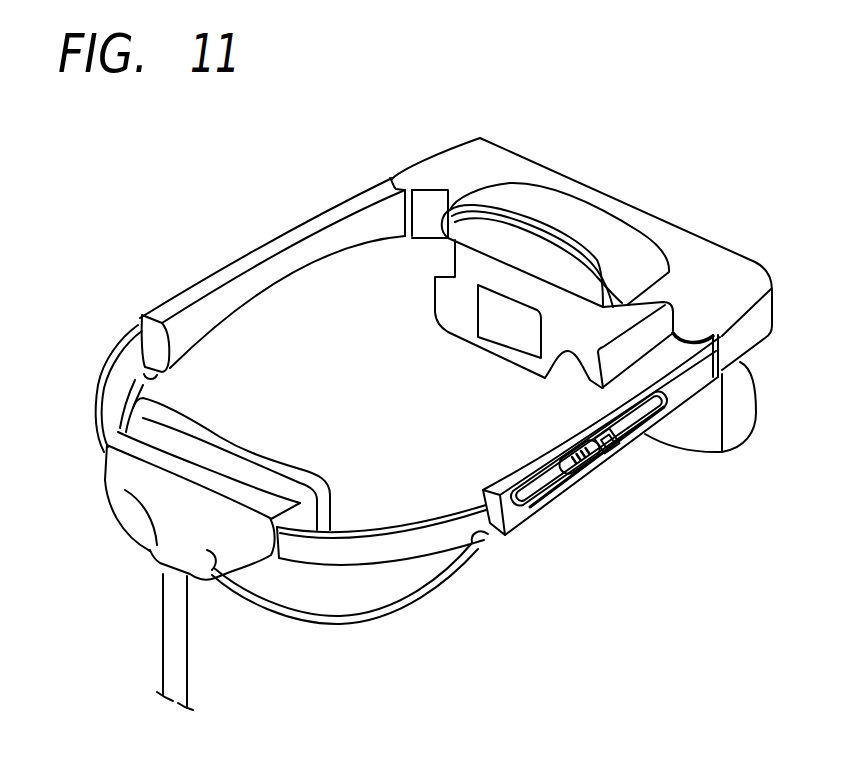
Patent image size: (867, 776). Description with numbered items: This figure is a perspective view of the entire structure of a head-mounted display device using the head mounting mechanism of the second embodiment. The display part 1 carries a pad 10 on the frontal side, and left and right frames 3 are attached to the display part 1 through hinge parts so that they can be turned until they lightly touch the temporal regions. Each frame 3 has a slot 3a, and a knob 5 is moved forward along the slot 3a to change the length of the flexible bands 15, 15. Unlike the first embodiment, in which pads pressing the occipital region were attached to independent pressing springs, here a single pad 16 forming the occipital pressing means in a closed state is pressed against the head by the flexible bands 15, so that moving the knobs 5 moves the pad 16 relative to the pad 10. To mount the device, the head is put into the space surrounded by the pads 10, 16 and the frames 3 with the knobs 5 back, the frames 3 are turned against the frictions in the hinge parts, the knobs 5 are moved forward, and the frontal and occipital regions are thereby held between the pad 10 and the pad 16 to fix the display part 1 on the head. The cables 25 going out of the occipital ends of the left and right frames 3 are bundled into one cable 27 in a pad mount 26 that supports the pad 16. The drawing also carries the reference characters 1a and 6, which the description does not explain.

The display part 1 is at (740, 390).
The housing of display unit 1a is at (737, 268).
The frame 3 is at (340, 210).
The slot 3a is at (532, 498).
The knob 5 is at (578, 473).
The slide switch 6 is at (609, 448).
The pad 10 is at (555, 260).
The flexible band 15 is at (98, 437).
The pad 16 is at (233, 470).
The cable 25 is at (118, 527).
The pad mount 26 is at (180, 552).
The cable 27 is at (173, 667).